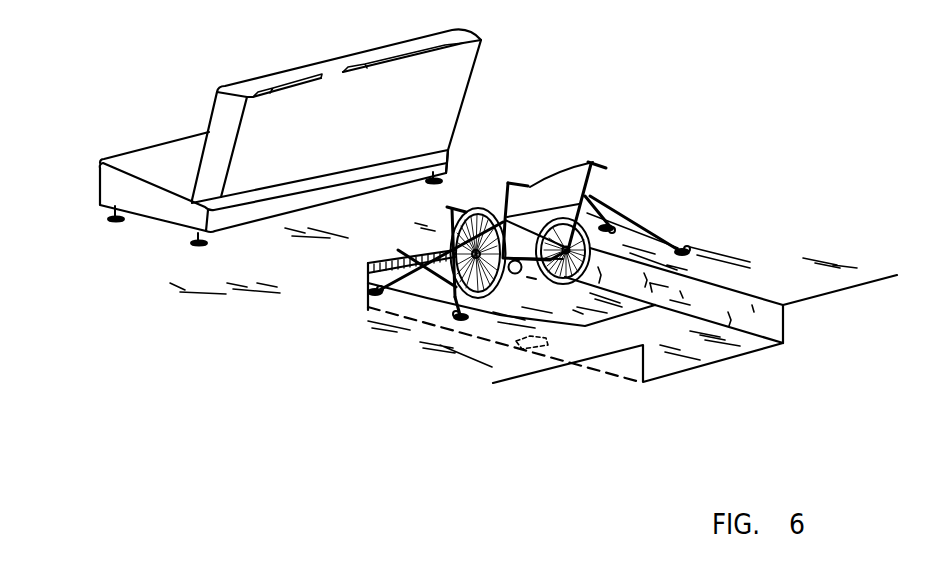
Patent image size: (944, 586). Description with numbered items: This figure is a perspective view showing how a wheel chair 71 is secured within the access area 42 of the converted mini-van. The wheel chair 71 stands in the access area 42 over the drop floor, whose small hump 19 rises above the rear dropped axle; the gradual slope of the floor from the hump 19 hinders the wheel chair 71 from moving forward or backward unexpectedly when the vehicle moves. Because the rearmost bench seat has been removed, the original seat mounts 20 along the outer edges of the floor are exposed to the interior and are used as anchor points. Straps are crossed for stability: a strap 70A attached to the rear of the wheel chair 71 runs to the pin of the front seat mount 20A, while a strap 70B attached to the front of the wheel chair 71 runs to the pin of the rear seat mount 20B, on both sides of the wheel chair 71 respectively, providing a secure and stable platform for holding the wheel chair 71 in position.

The hump 19 is at (700, 284).
The seat mounts 20 is at (115, 222).
The front seat mount 20A is at (371, 295).
The rear seat mount 20B is at (461, 320).
The access area 42 is at (742, 347).
The strap 70A is at (367, 262).
The strap 70B is at (437, 293).
The wheel chair 71 is at (534, 158).